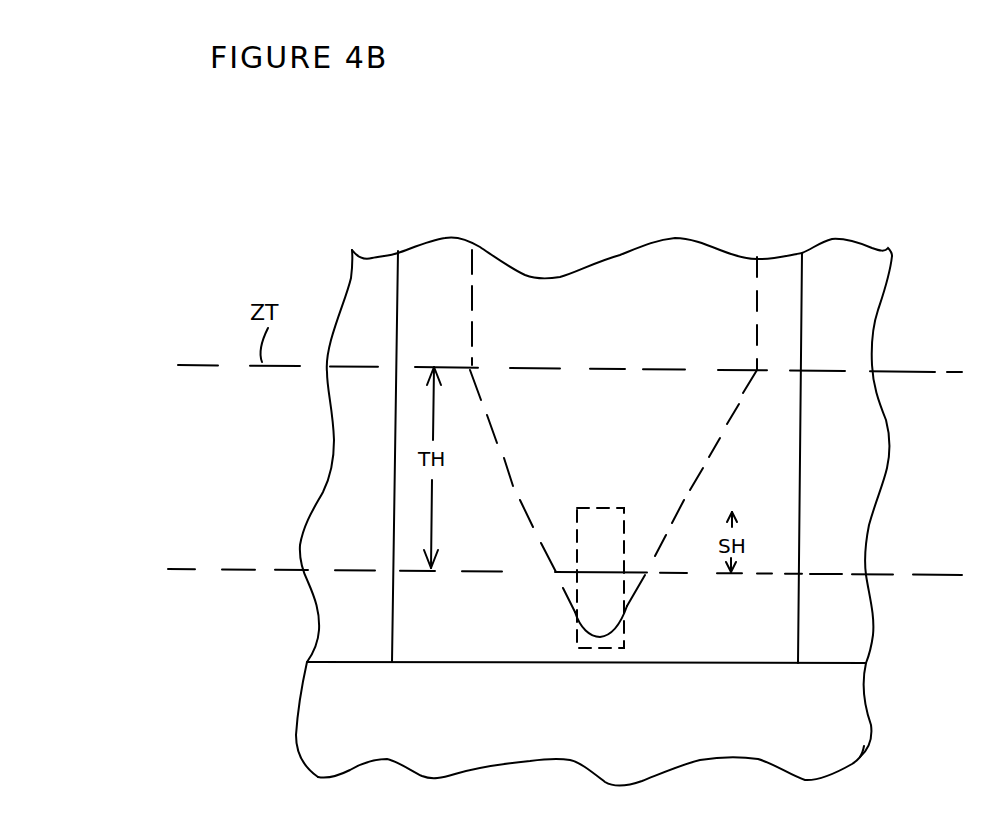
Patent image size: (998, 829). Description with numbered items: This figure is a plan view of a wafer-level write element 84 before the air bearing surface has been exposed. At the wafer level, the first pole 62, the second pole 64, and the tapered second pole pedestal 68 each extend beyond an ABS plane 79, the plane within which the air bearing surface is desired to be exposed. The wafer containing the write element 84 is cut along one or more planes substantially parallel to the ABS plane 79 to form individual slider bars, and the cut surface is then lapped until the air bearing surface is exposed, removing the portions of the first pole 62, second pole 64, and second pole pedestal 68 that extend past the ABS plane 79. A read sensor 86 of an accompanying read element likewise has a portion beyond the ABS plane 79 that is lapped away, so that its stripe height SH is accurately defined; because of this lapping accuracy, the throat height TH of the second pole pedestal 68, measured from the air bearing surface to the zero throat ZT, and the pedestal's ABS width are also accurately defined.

The write element 84 is at (814, 157).
The first pole 62 is at (866, 629).
The second pole 64 is at (424, 260).
The second pole pedestal 68 is at (735, 297).
The ABS plane 79 is at (236, 566).
The read sensor 86 is at (598, 517).